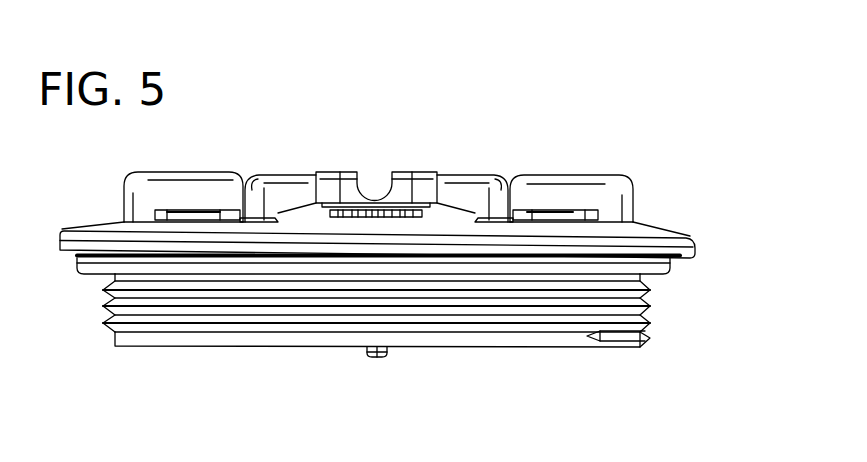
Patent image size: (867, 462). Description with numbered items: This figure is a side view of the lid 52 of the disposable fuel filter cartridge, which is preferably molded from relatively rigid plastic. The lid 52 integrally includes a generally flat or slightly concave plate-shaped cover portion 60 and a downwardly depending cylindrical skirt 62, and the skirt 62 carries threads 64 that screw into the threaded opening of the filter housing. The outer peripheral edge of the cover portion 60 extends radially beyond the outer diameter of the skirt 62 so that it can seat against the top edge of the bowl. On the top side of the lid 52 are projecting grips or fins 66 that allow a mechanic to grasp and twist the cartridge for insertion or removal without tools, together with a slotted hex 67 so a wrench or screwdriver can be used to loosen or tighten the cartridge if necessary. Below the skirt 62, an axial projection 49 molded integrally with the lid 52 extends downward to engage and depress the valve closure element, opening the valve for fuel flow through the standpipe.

The lid 52 is at (649, 190).
The cover portion 60 is at (683, 250).
The cylindrical skirt 62 is at (526, 337).
The threads 64 is at (648, 318).
The grips or fins 66 is at (220, 193).
The slotted hex 67 is at (350, 187).
The axial projection 49 is at (377, 356).